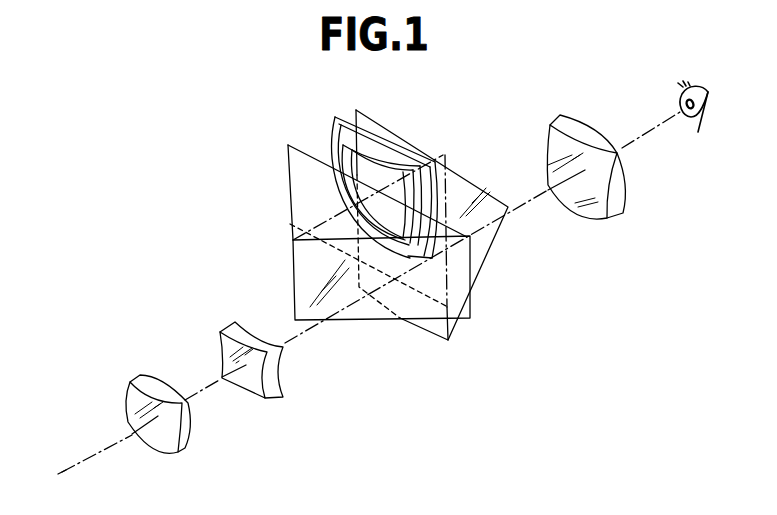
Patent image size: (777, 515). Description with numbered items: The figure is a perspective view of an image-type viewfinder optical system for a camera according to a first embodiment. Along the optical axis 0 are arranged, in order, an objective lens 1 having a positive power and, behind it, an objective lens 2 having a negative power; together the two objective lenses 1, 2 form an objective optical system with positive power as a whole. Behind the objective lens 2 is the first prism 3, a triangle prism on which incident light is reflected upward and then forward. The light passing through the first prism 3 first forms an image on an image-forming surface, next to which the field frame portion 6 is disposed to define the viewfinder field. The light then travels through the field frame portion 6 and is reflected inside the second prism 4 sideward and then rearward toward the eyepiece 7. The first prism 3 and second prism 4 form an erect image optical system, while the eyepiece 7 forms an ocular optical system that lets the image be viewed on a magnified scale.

The optical axis 0 is at (73, 463).
The objective lens 1 is at (158, 438).
The objective lens 2 is at (257, 385).
The first prism 3 is at (490, 248).
The second prism 4 is at (293, 280).
The field frame portion 6 is at (335, 132).
The eyepiece 7 is at (630, 187).